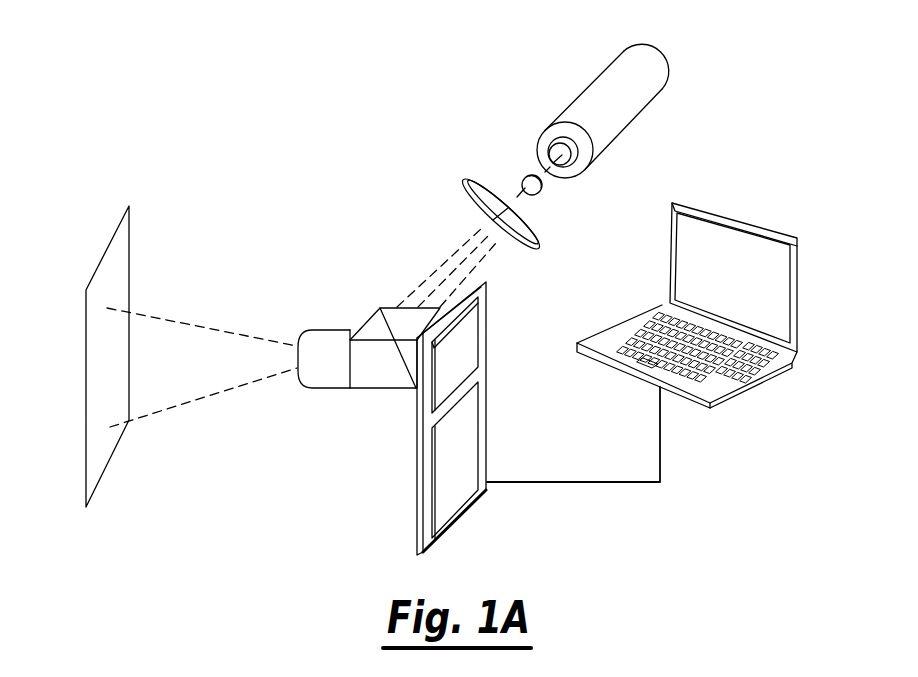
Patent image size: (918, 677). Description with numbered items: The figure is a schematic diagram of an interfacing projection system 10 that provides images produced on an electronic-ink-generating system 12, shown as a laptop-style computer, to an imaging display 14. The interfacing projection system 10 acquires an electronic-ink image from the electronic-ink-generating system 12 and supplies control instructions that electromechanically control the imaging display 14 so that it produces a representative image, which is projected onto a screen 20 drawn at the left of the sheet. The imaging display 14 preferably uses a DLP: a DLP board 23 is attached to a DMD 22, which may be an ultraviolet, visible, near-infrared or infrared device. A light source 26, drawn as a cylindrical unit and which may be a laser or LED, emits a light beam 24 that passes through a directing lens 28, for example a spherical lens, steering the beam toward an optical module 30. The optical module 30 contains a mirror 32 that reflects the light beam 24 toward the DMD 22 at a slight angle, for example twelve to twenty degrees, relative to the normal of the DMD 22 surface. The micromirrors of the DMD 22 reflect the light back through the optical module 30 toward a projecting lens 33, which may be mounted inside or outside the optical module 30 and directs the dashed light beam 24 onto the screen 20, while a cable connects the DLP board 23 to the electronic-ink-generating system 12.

The interfacing projection system 10 is at (440, 90).
The electronic-ink-generating system 12 is at (731, 215).
The imaging display 14 is at (326, 221).
The screen 20 is at (120, 226).
The DMD 22 is at (475, 335).
The DLP board 23 is at (415, 477).
The light beam 24 is at (178, 323).
The light source 26 is at (673, 73).
The directing lens 28 is at (465, 203).
The optical module 30 is at (379, 390).
The mirror 32 is at (380, 325).
The projecting lens 33 is at (320, 388).